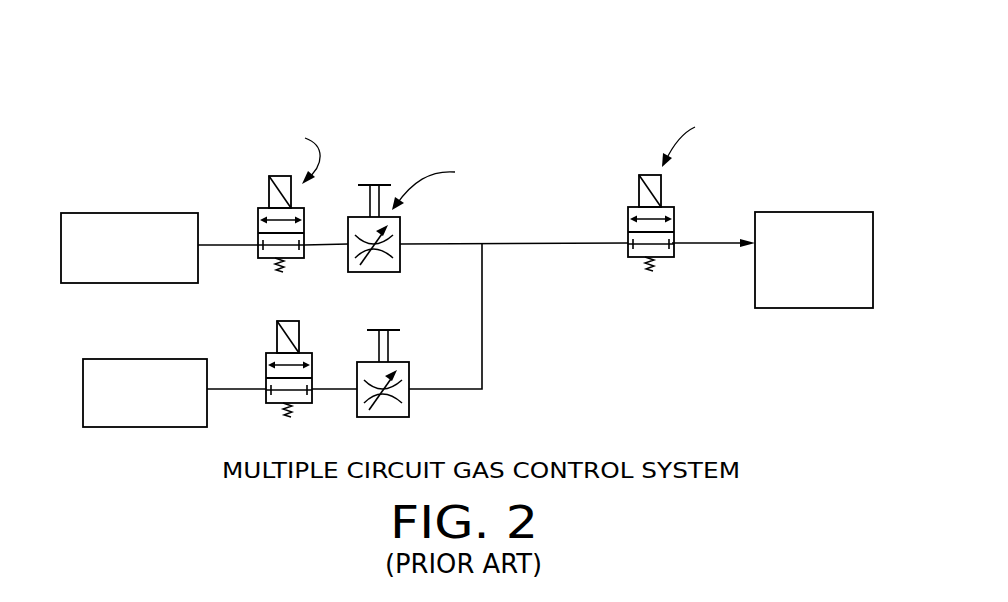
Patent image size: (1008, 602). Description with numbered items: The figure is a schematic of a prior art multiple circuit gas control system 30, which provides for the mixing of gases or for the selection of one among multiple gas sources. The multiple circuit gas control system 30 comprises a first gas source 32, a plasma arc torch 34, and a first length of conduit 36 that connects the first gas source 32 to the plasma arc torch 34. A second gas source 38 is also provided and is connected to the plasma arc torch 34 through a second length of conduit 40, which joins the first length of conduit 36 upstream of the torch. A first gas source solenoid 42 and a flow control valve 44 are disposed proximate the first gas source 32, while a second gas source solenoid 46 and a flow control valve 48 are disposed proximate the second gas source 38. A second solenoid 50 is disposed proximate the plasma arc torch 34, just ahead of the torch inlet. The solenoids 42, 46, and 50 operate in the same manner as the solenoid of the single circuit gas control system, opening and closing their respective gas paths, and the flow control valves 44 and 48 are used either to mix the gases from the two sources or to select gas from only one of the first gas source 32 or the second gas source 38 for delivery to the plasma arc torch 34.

The multiple circuit gas control system 30 is at (550, 63).
The first gas source 32 is at (90, 213).
The plasma arc torch 34 is at (790, 308).
The first length of conduit 36 is at (530, 244).
The second gas source 38 is at (128, 428).
The second length of conduit 40 is at (482, 315).
The first gas source solenoid 42 is at (267, 259).
The flow control valve 44 is at (390, 272).
The second gas source solenoid 46 is at (273, 405).
The flow control valve 48 is at (398, 417).
The second solenoid 50 is at (662, 257).